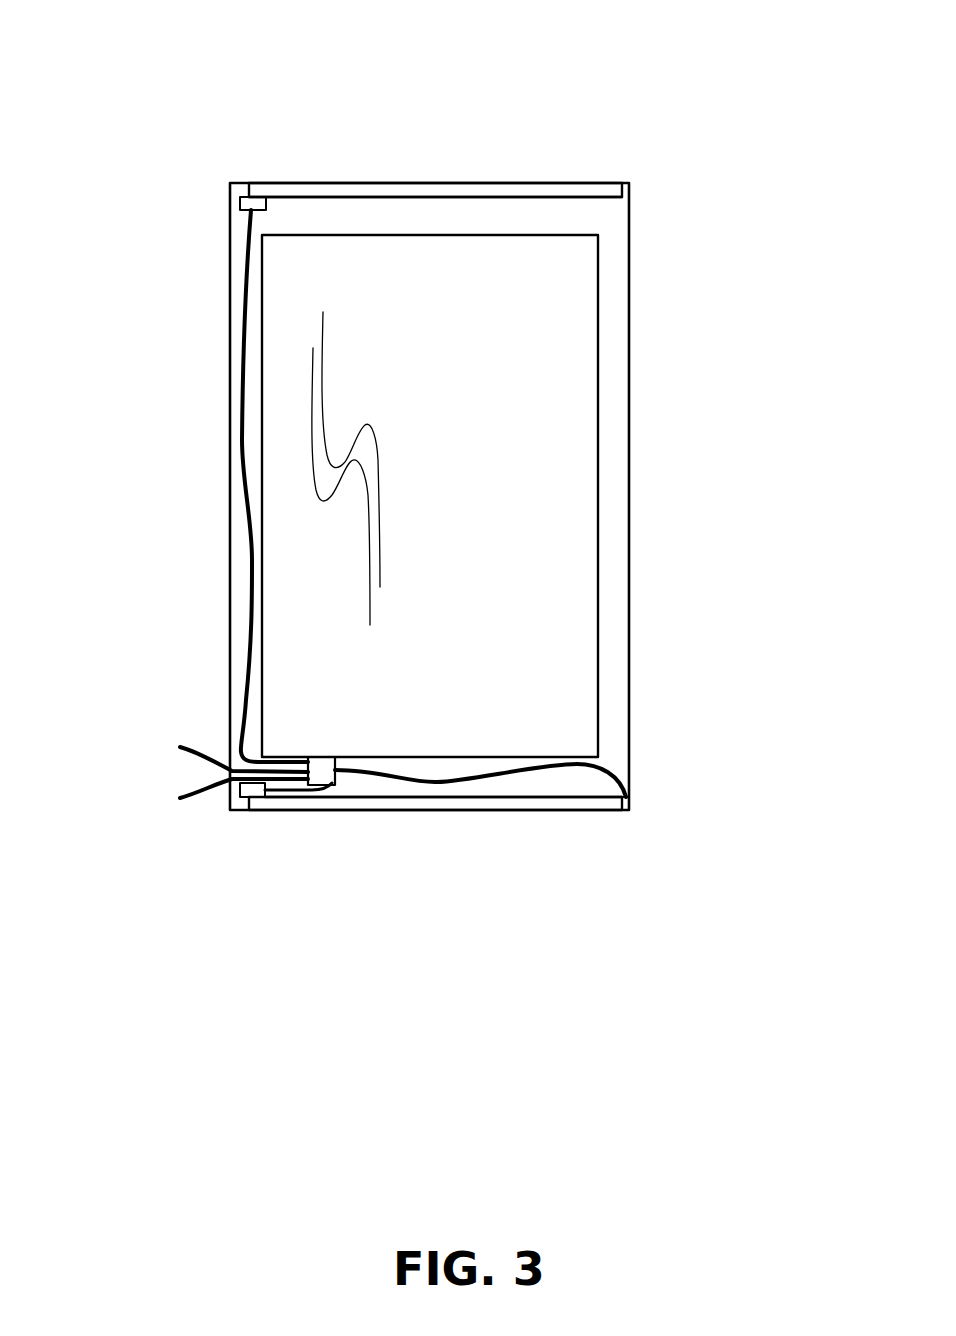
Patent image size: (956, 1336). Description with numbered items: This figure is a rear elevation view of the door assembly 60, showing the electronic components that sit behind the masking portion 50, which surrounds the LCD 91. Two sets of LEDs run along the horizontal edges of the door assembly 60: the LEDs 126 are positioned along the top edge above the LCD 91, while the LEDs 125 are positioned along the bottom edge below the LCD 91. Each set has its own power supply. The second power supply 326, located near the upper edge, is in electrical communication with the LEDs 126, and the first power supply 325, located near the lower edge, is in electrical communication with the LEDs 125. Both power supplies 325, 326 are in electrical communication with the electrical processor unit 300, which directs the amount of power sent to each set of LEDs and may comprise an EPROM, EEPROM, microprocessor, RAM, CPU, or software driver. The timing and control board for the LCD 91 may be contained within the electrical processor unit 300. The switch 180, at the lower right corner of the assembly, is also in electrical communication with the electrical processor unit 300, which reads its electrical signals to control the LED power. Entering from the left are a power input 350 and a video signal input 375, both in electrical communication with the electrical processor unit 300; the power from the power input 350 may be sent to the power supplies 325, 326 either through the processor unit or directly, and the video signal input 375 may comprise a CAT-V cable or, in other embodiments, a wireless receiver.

The door assembly 60 is at (713, 72).
The masking portion 50 is at (617, 303).
The LEDs 126 is at (372, 190).
The LEDs 125 is at (545, 803).
The LCD 91 is at (563, 405).
The second power supply 326 is at (239, 205).
The electrical processor unit 300 is at (336, 786).
The power input 350 is at (172, 736).
The video signal input 375 is at (172, 806).
The first power supply 325 is at (231, 790).
The switch 180 is at (630, 805).